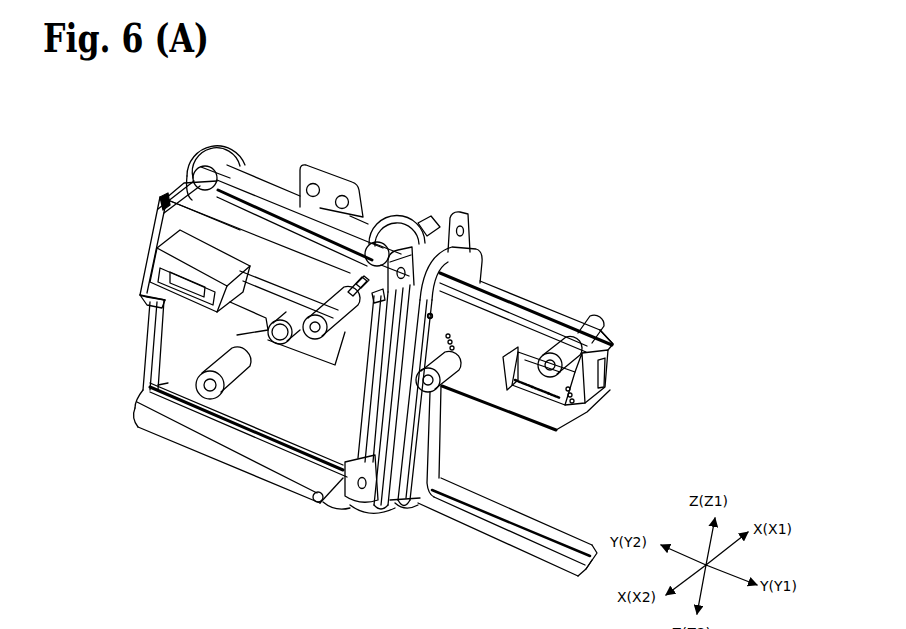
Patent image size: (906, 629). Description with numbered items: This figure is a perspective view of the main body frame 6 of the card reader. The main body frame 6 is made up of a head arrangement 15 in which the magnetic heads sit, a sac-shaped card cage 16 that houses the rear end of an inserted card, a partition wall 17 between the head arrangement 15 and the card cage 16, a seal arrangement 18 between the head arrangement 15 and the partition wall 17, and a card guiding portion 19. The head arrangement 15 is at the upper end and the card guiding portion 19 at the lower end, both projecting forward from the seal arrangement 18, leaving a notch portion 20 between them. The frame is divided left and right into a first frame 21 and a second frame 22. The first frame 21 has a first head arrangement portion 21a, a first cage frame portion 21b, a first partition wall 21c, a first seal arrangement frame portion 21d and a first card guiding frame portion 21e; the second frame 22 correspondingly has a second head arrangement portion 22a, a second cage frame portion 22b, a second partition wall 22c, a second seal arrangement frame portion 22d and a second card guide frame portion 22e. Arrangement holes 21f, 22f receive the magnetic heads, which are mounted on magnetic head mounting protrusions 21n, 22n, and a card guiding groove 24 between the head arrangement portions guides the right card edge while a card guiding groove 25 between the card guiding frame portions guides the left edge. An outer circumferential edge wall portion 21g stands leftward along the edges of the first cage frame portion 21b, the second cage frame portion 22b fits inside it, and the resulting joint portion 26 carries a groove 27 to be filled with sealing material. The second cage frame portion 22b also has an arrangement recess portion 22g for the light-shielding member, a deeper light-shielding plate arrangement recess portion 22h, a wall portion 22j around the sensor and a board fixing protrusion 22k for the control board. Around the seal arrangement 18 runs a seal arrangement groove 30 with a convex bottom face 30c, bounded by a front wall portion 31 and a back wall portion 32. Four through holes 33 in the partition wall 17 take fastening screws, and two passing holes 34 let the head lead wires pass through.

The main body frame 6 is at (539, 153).
The head arrangement 15 is at (598, 290).
The card cage 16 is at (128, 357).
The partition wall 17 is at (463, 210).
The seal arrangement 18 is at (508, 222).
The card guiding portion 19 is at (478, 565).
The notch portion 20 is at (548, 490).
The first frame 21 is at (276, 178).
The first head arrangement portion 21a is at (612, 357).
The first cage frame portion 21b is at (331, 191).
The first partition wall 21c is at (455, 212).
The first seal arrangement frame portion 21d is at (483, 269).
The first card guiding frame portion 21e is at (507, 504).
The arrangement hole 21f is at (547, 398).
The outer circumferential edge wall portion 21g is at (186, 178).
The magnetic head mounting protrusion 21n is at (608, 327).
The second frame 22 is at (148, 240).
The second head arrangement portion 22a is at (570, 413).
The second cage frame portion 22b is at (204, 215).
The second partition wall 22c is at (360, 439).
The second seal arrangement frame portion 22d is at (400, 512).
The second card guide frame portion 22e is at (517, 553).
The arrangement hole 22f is at (527, 398).
The arrangement recess portion 22g is at (327, 358).
The light-shielding plate arrangement recess portion 22h is at (192, 295).
The wall portion 22j is at (157, 298).
The board fixing protrusion 22k is at (202, 405).
The magnetic head mounting protrusion 22n is at (442, 400).
The card guiding groove 24 is at (610, 385).
The card guiding groove 25 is at (535, 535).
The joint portion 26 is at (140, 367).
The groove 27 is at (163, 384).
The seal arrangement groove 30 is at (458, 258).
The bottom face 30c is at (400, 258).
The front wall portion 31 is at (405, 499).
The back wall portion 32 is at (373, 512).
The through hole 33 is at (410, 224).
The passing hole 34 is at (433, 317).